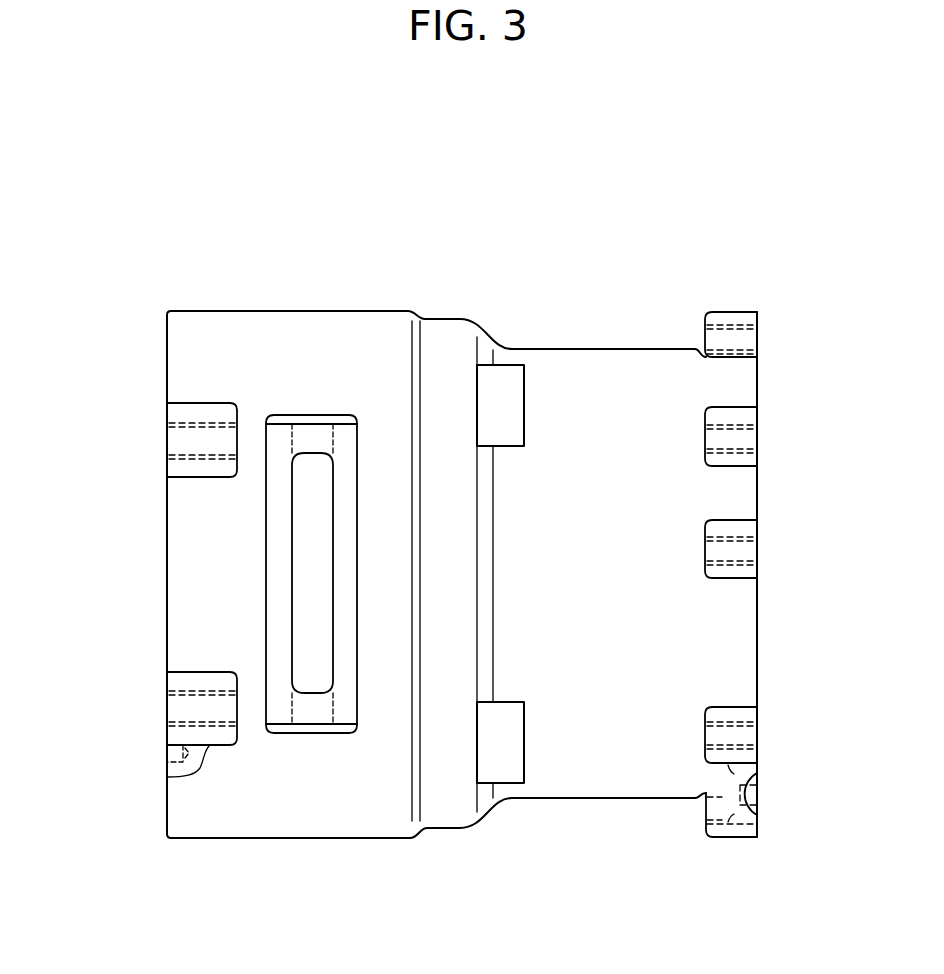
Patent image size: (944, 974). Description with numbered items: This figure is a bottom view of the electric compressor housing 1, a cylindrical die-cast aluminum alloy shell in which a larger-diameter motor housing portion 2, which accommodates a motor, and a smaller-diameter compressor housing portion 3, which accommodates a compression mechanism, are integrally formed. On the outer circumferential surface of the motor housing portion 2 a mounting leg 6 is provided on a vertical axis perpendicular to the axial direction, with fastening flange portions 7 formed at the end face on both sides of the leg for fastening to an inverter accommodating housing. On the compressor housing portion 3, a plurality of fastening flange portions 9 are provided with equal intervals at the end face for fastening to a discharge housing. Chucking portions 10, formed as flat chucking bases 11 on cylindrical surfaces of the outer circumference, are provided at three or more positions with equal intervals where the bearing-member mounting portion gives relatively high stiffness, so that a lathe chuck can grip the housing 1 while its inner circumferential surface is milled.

The electric compressor housing 1 is at (451, 240).
The motor housing portion 2 is at (292, 822).
The compressor housing portion 3 is at (647, 775).
The mounting leg 6 is at (313, 437).
The fastening flange portion 7 is at (185, 442).
The fastening flange portion 9 is at (747, 550).
The chucking portion 10 is at (542, 385).
The chucking base 11 is at (512, 421).